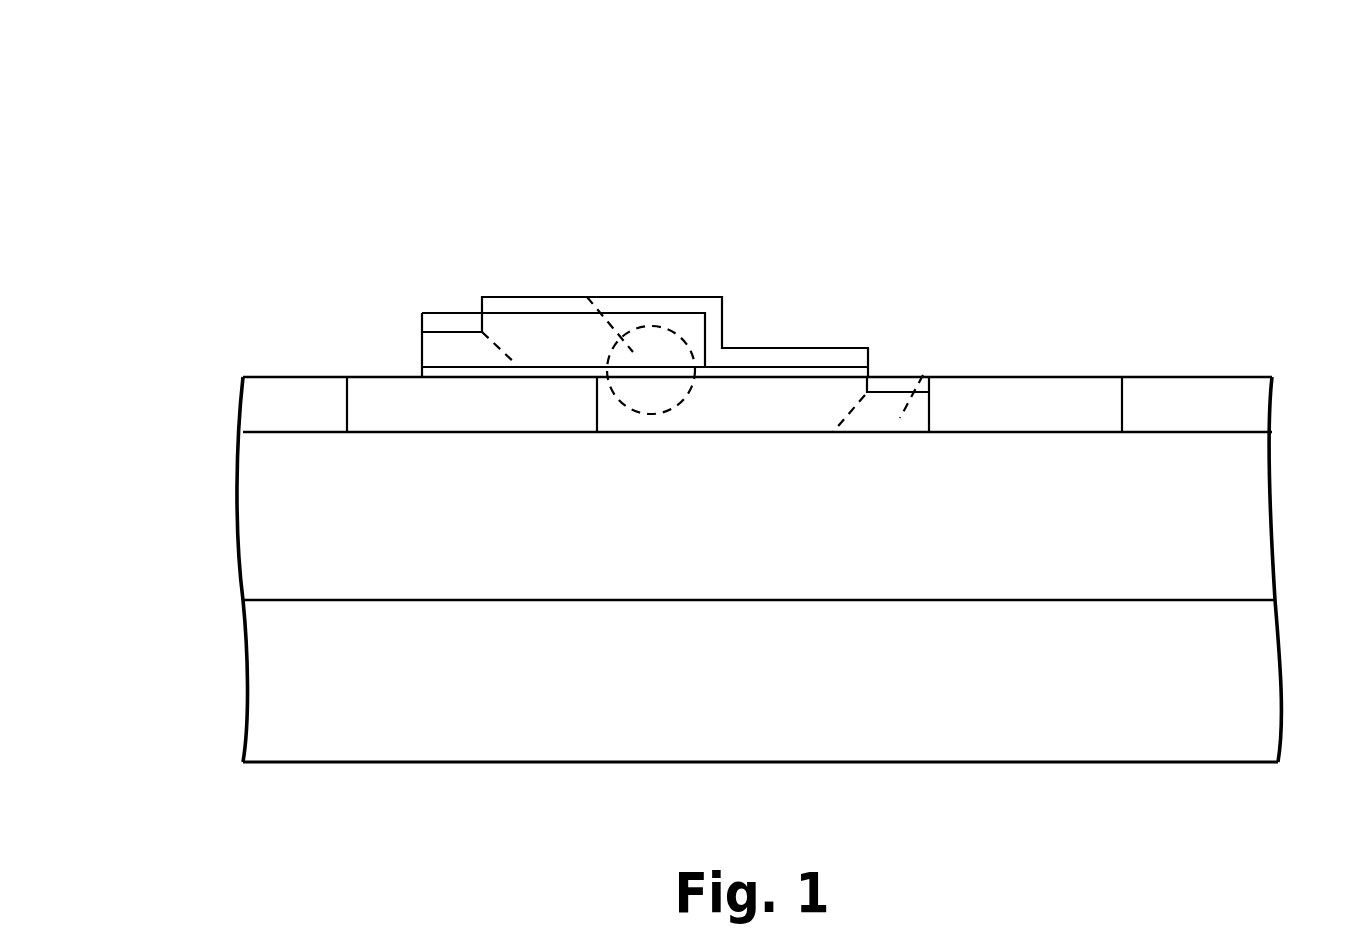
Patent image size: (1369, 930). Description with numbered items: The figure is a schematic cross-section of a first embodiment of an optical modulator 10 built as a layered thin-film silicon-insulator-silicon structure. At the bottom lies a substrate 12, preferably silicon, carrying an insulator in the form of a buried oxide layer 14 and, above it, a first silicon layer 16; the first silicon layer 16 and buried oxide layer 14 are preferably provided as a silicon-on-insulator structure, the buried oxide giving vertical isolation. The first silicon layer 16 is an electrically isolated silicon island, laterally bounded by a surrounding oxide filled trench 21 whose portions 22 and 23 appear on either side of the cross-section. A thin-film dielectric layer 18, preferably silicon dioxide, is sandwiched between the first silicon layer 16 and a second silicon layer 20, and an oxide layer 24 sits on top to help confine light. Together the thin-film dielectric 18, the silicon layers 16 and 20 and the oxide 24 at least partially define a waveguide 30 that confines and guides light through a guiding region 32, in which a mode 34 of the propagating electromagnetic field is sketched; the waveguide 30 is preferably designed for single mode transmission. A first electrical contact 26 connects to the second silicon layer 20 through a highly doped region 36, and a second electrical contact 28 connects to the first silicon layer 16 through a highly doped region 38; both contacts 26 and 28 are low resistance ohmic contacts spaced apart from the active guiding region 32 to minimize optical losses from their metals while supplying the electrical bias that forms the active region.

The optical modulator 10 is at (807, 143).
The substrate 12 is at (710, 723).
The buried oxide layer 14 is at (1243, 497).
The first silicon layer 16 is at (793, 390).
The thin-film dielectric layer 18 is at (653, 368).
The second silicon layer 20 is at (535, 327).
The oxide filled trench 21 is at (428, 400).
The trench portion 22 is at (390, 382).
The trench portion 23 is at (1015, 398).
The oxide layer 24 is at (620, 300).
The first electrical contact 26 is at (440, 325).
The second electrical contact 28 is at (897, 383).
The waveguide 30 is at (598, 130).
The guiding region 32 is at (678, 340).
The mode 34 is at (587, 297).
The highly doped region 36 is at (455, 352).
The highly doped region 38 is at (923, 375).